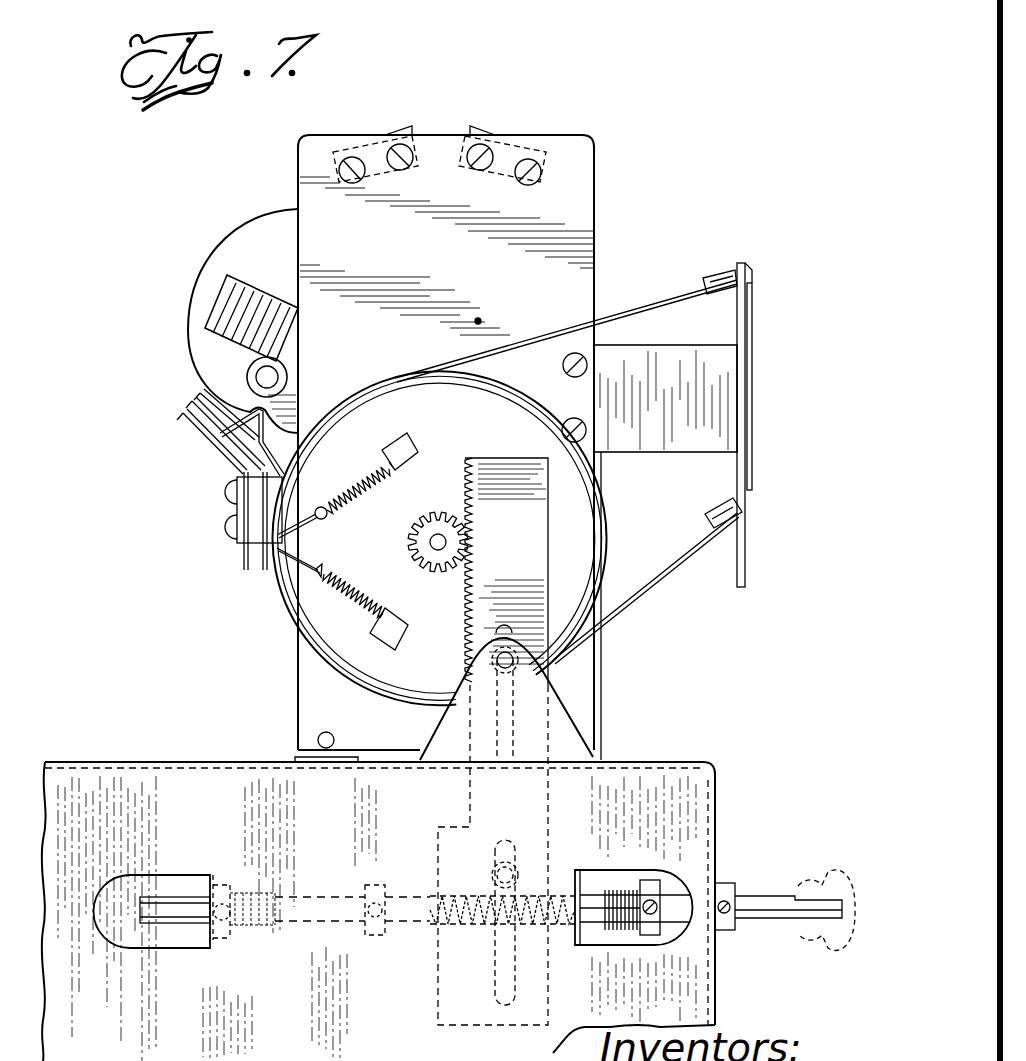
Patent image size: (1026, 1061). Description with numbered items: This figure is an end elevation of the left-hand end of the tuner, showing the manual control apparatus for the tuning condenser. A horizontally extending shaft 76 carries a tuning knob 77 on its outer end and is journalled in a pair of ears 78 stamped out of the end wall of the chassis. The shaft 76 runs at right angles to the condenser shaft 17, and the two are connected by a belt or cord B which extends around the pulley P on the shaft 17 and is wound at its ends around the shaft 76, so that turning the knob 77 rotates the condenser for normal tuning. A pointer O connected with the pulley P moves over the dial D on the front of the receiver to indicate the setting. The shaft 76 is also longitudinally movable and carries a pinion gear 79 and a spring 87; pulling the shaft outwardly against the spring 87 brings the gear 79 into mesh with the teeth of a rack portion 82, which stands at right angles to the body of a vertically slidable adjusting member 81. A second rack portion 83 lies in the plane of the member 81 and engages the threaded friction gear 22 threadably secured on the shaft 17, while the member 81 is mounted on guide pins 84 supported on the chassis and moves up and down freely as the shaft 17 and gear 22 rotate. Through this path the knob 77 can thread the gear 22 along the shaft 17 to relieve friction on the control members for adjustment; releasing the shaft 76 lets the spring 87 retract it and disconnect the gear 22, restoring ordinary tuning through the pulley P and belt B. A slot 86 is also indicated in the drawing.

The pulley P is at (376, 416).
The pointer O is at (752, 333).
The dial D is at (743, 528).
The second rack portion 83 is at (465, 458).
The threaded friction gear 22 is at (412, 538).
The shaft 17 is at (436, 548).
The guide pins 84 is at (495, 665).
The vertically slidable adjusting member 81 is at (580, 693).
The belt or cord B is at (605, 727).
The slot 86 is at (455, 721).
The ears 78 is at (205, 885).
The pinion gear 79 is at (375, 882).
The rack portion 82 is at (440, 845).
The spring 87 is at (470, 936).
The tuning knob 77 is at (826, 882).
The shaft 76 is at (770, 917).